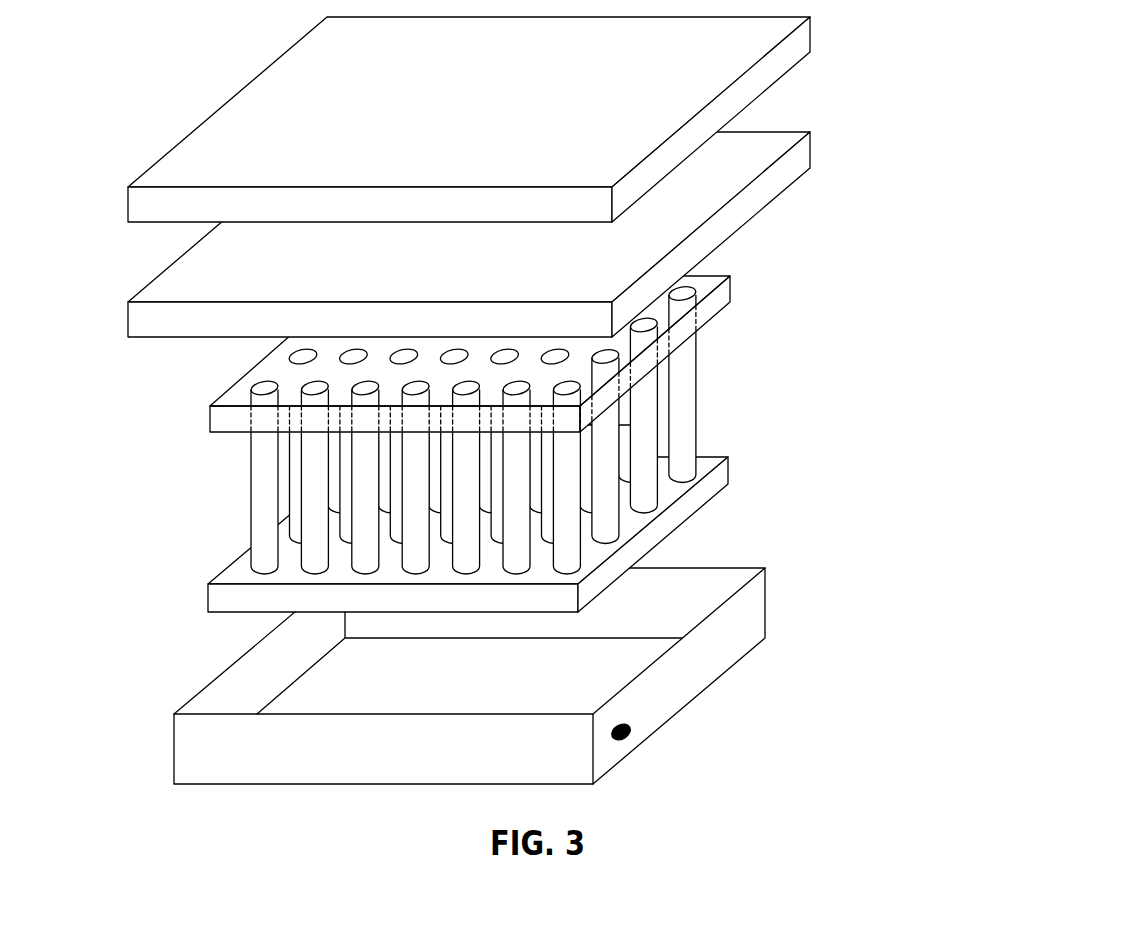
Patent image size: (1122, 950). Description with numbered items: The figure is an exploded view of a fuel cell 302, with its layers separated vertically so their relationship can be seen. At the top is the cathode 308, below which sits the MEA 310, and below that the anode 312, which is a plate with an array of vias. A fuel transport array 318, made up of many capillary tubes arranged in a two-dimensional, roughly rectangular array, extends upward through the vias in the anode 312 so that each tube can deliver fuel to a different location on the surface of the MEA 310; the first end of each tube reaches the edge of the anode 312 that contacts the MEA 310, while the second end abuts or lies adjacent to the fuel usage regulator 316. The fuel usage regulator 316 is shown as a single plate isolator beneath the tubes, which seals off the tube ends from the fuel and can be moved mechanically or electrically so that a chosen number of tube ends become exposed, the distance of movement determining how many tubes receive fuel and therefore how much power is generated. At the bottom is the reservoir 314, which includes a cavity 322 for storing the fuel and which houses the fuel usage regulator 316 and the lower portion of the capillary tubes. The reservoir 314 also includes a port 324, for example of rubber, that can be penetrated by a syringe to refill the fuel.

The fuel cell 302 is at (608, 417).
The cathode 308 is at (810, 42).
The MEA 310 is at (810, 153).
The anode 312 is at (730, 292).
The reservoir 314 is at (765, 607).
The fuel usage regulator 316 is at (730, 470).
The fuel transport array 318 is at (747, 400).
The cavity 322 is at (569, 698).
The port 324 is at (630, 731).